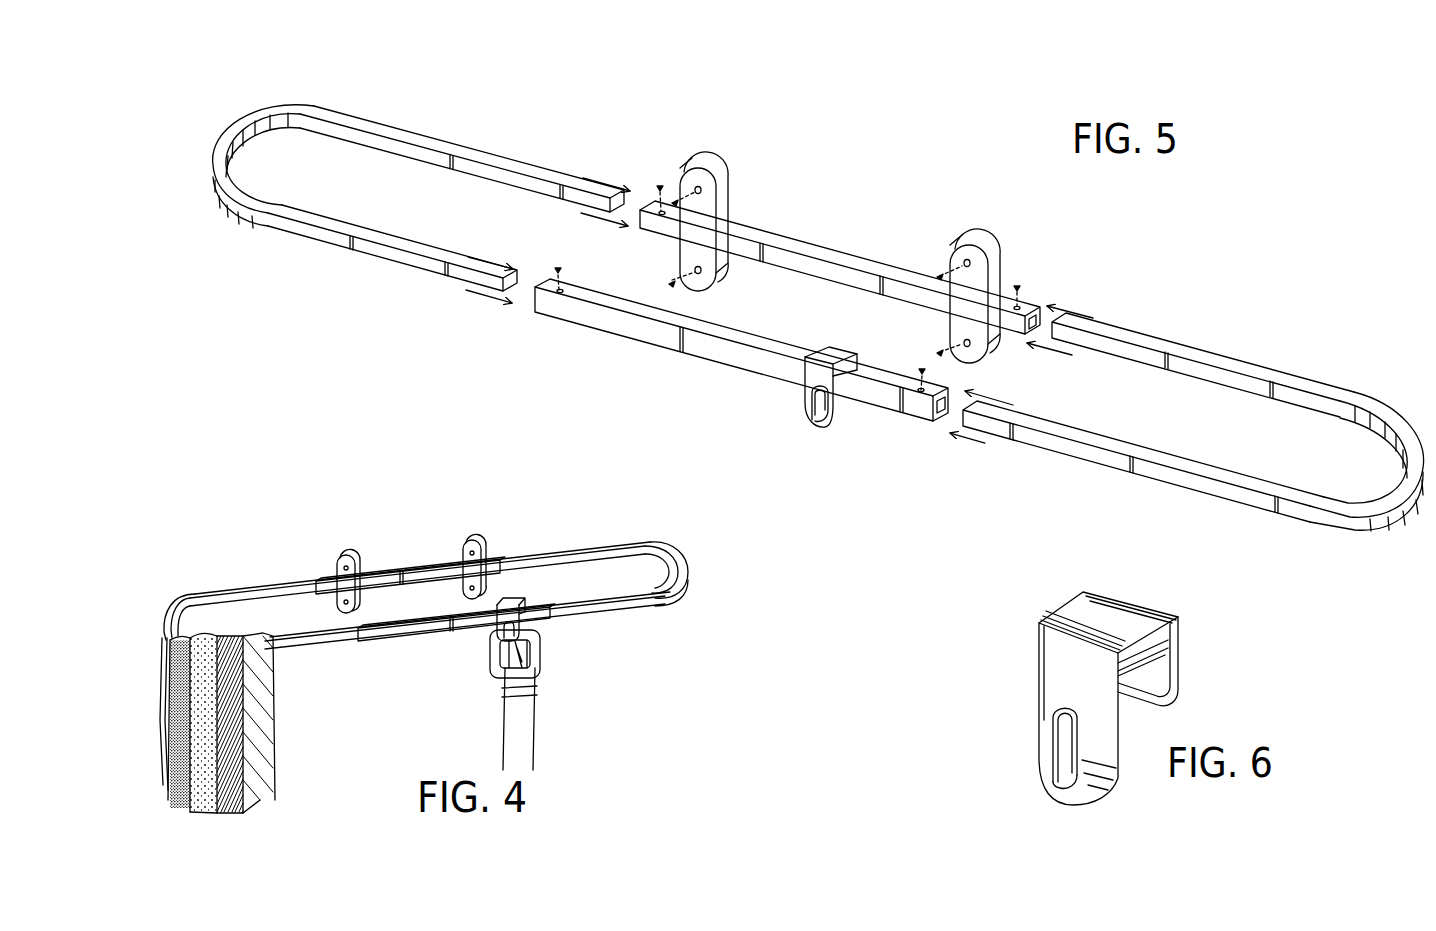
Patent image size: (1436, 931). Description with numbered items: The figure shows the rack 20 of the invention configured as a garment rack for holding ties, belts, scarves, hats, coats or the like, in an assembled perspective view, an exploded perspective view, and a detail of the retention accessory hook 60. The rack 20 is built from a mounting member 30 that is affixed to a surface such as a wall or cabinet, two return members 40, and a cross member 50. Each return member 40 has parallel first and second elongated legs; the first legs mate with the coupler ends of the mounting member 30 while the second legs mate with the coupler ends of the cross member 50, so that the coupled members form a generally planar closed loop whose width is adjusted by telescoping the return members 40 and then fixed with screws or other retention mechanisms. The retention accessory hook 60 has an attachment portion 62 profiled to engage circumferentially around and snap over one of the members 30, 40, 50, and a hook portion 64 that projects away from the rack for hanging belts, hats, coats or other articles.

In FIG. 5, the rack 20 is at (1073, 258).
In FIG. 4, the rack 20 is at (283, 562).
In FIG. 5, the mounting member 30 is at (835, 230).
In FIG. 4, the mounting member 30 is at (410, 575).
In FIG. 5, the return member 40 is at (240, 108).
In FIG. 4, the return member 40 is at (426, 595).
In FIG. 5, the cross member 50 is at (886, 420).
In FIG. 4, the cross member 50 is at (456, 619).
In FIG. 5, the retention accessory hook 60 is at (797, 407).
In FIG. 4, the retention accessory hook 60 is at (511, 619).
In FIG. 6, the retention accessory hook 60 is at (1027, 690).
In FIG. 6, the attachment portion 62 is at (1180, 668).
In FIG. 6, the hook portion 64 is at (1063, 762).